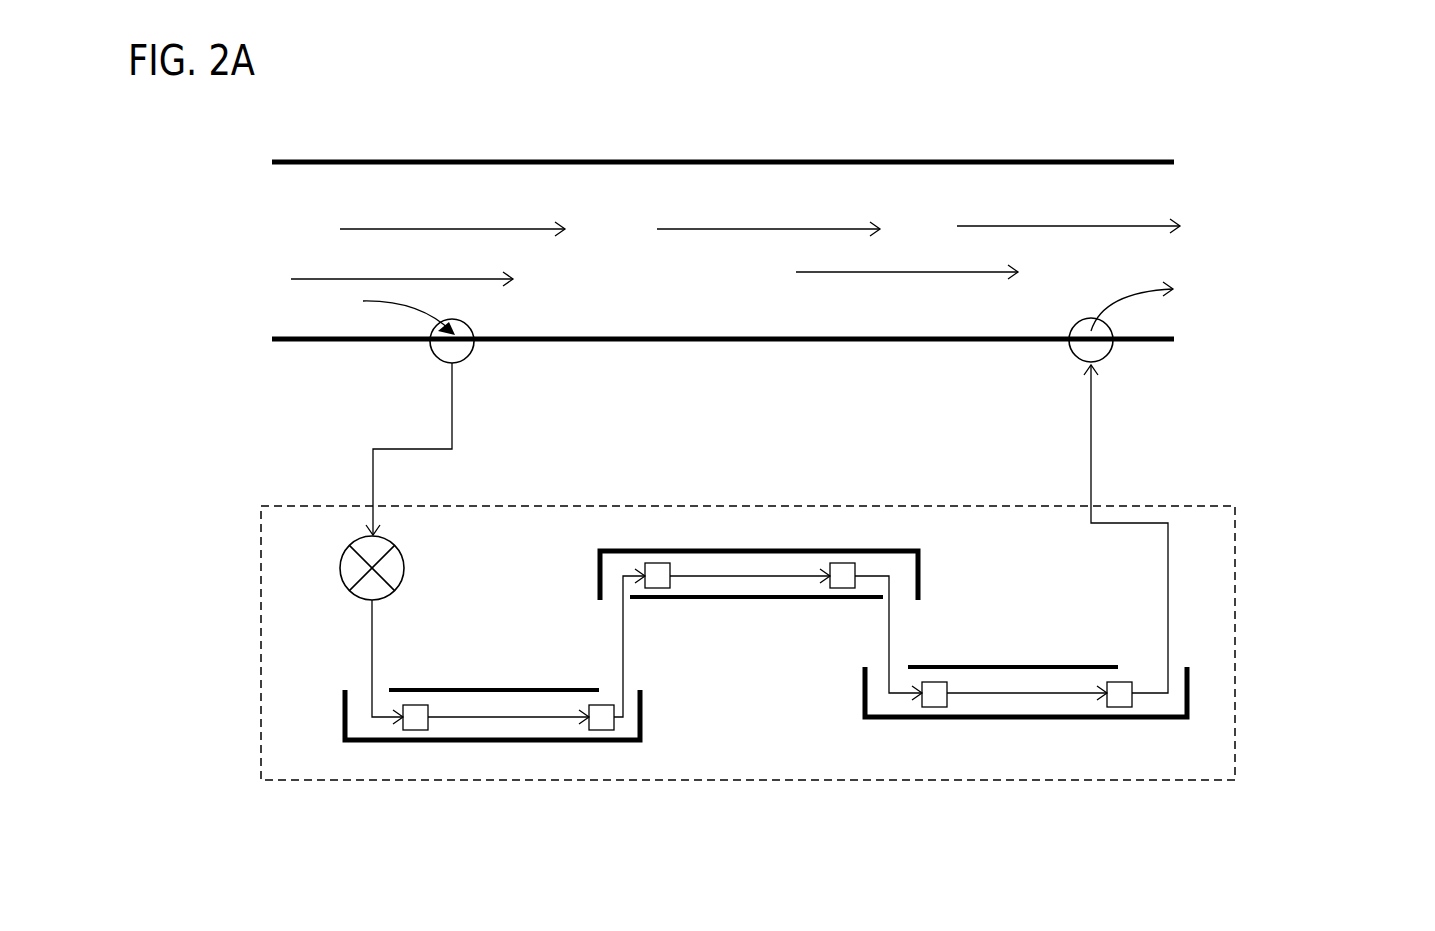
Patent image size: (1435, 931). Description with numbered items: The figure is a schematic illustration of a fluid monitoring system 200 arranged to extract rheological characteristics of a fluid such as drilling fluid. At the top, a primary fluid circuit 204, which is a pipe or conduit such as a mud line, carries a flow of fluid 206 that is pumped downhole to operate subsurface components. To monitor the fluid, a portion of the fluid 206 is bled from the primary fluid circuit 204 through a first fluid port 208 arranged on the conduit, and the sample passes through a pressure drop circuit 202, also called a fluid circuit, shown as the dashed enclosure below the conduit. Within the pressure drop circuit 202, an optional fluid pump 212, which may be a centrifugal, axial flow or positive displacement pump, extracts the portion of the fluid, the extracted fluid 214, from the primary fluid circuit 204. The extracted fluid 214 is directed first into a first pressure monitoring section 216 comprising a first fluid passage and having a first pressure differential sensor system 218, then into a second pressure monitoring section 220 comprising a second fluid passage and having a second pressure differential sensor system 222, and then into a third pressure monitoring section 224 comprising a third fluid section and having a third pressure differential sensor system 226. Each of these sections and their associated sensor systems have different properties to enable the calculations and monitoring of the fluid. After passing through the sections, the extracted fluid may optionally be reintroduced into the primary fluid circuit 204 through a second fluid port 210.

The fluid monitoring system 200 is at (1312, 252).
The pressure drop circuit 202 is at (1235, 619).
The primary fluid circuit 204 is at (740, 160).
The fluid 206 is at (728, 282).
The first fluid port 208 is at (468, 356).
The second fluid port 210 is at (1107, 355).
The fluid pump 212 is at (343, 576).
The extracted fluid 214 is at (462, 425).
The first pressure monitoring section 216 is at (490, 742).
The first pressure differential sensor system 218 is at (597, 714).
The second pressure monitoring section 220 is at (747, 600).
The second pressure differential sensor system 222 is at (840, 564).
The third pressure monitoring section 224 is at (1035, 718).
The third pressure differential sensor system 226 is at (1117, 683).